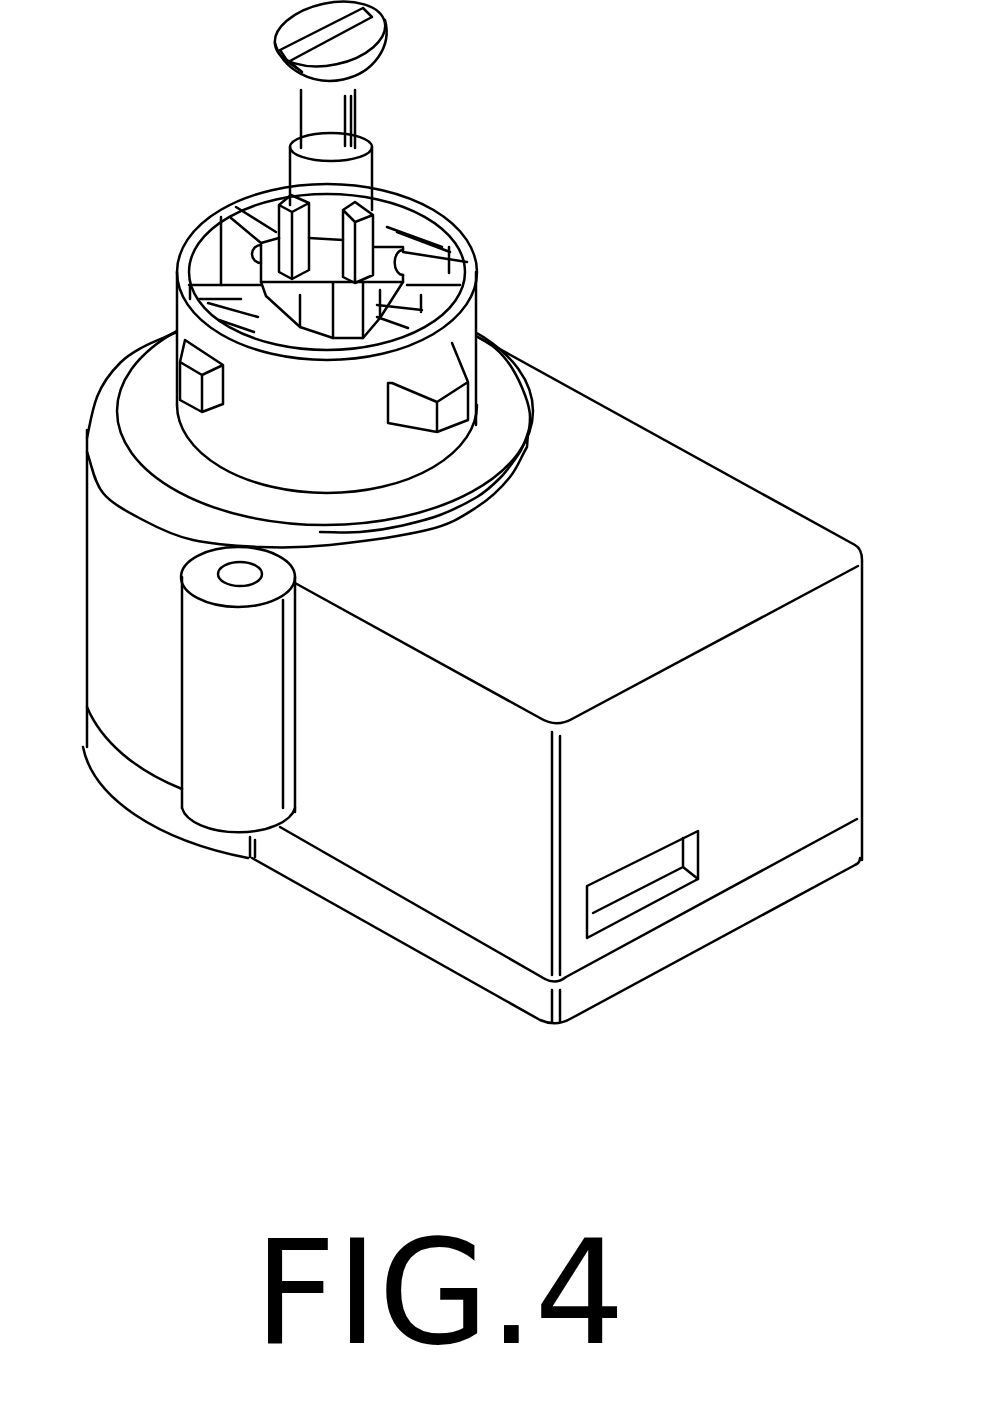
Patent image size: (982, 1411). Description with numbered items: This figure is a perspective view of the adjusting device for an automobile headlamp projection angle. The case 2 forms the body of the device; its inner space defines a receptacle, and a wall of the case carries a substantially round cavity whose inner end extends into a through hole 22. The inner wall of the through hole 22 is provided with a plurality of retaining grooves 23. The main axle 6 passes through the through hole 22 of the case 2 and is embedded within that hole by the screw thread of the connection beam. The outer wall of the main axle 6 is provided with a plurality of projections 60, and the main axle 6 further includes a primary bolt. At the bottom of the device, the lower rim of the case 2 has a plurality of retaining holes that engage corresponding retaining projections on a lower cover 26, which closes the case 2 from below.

The case 2 is at (617, 447).
The main axle 6 is at (333, 117).
The through hole 22 is at (183, 318).
The retaining grooves 23 is at (385, 264).
The lower cover 26 is at (742, 904).
The projections 60 is at (367, 232).